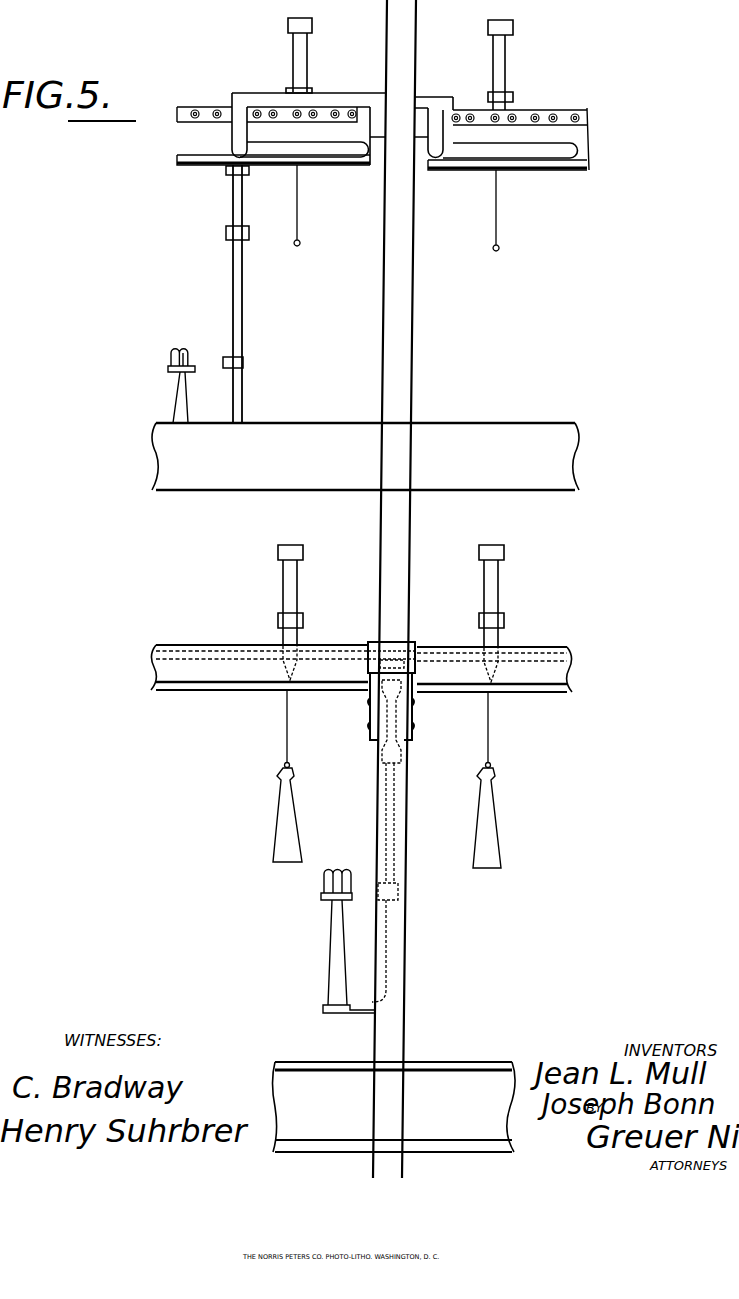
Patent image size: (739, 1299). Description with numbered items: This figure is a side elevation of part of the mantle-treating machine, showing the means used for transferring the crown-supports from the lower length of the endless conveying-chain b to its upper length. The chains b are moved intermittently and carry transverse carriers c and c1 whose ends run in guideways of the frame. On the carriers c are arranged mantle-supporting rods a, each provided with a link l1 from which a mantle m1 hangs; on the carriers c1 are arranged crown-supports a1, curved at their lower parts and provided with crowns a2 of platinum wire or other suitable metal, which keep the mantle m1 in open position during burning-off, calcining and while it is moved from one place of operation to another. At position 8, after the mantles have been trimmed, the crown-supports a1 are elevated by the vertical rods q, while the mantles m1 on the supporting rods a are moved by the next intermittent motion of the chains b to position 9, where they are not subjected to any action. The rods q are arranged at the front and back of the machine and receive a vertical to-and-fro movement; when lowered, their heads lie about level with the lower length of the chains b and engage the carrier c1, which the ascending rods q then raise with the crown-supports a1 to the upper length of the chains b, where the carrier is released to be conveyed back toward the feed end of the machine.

The supporting-rod a is at (311, 66).
The crown-support a1 is at (245, 301).
The crown a2 is at (198, 365).
The conveying-chain b is at (562, 111).
The carrier c is at (488, 38).
The carrier c1 is at (232, 200).
The link l1 is at (297, 205).
The mantle m1 is at (295, 825).
The rod q is at (413, 850).
The position 8 is at (301, 729).
The position 9 is at (507, 730).